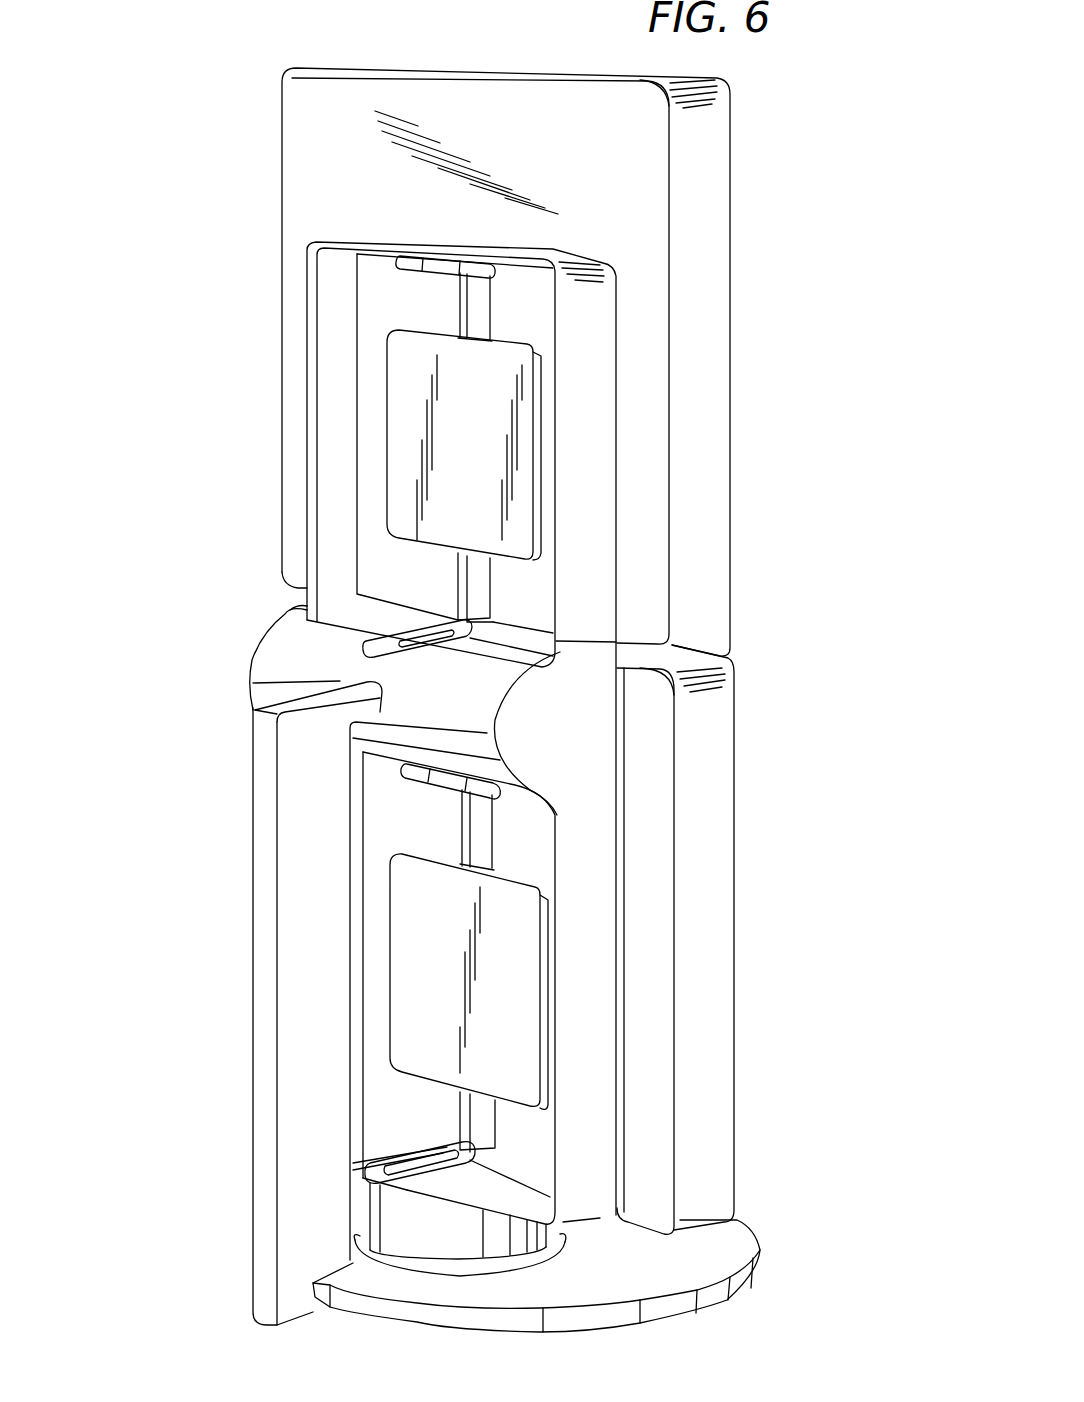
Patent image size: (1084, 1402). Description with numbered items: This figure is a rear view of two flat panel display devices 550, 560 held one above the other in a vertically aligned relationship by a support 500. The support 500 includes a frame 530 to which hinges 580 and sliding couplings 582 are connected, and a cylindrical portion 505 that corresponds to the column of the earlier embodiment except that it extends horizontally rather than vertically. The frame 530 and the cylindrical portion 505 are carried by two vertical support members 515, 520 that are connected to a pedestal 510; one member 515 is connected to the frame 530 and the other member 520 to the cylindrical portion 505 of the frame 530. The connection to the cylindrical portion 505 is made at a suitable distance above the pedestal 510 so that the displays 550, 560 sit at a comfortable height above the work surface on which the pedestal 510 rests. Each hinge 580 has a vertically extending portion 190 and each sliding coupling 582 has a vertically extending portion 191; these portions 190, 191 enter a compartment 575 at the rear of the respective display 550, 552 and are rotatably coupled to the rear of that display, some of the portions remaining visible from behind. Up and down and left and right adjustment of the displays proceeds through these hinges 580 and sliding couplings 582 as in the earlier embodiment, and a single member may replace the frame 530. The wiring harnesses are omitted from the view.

The support 500 is at (162, 693).
The cylindrical portion 505 is at (258, 668).
The pedestal 510 is at (758, 1242).
The vertical support member 515 is at (253, 1084).
The vertical support member 520 is at (558, 1257).
The frame 530 is at (599, 240).
The flat panel display device 550 is at (733, 170).
The display 552 is at (628, 90).
The flat panel display device 560 is at (735, 759).
The compartment 575 is at (387, 428).
The hinge 580 is at (432, 290).
The sliding coupling 582 is at (424, 625).
The vertically extending portion 190 is at (481, 307).
The vertically extending portion 191 is at (487, 592).